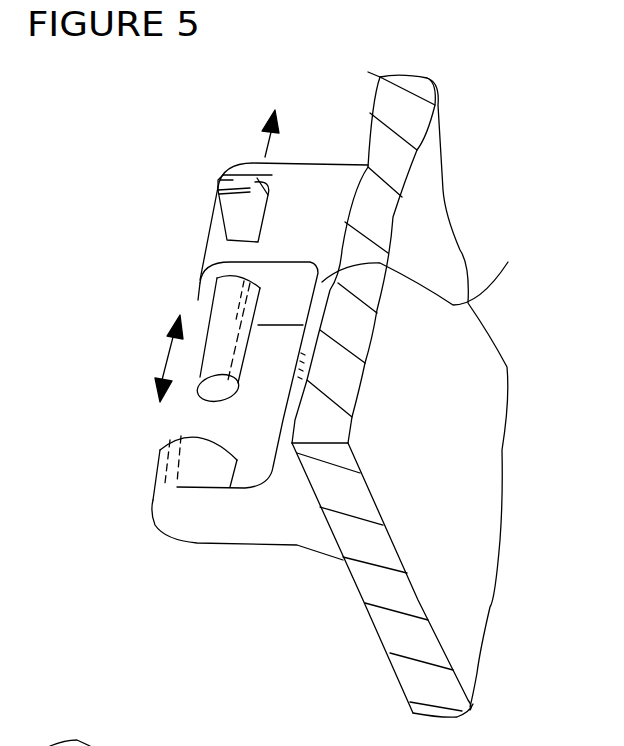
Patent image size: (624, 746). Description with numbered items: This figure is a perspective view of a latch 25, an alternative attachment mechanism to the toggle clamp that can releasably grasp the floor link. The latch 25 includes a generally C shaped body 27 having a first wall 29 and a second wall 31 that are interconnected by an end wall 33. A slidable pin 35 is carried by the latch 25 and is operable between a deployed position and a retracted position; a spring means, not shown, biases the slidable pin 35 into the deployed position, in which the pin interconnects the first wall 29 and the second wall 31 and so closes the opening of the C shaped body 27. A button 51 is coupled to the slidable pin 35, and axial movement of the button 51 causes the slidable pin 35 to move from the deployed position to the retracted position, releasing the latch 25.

The latch 25 is at (127, 257).
The generally C shaped body 27 is at (332, 158).
The first wall 29 is at (305, 187).
The second wall 31 is at (202, 475).
The end wall 33 is at (422, 269).
The slidable pin 35 is at (212, 357).
The button 51 is at (233, 202).